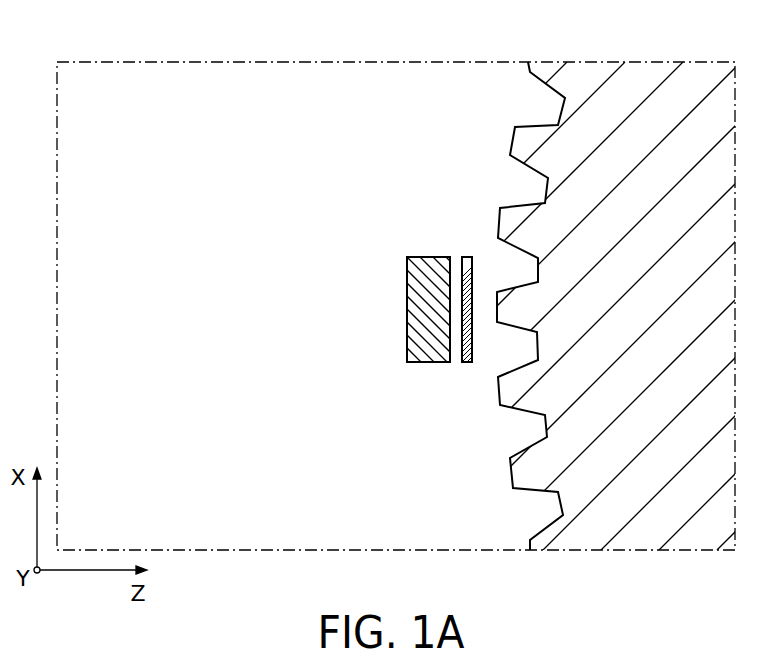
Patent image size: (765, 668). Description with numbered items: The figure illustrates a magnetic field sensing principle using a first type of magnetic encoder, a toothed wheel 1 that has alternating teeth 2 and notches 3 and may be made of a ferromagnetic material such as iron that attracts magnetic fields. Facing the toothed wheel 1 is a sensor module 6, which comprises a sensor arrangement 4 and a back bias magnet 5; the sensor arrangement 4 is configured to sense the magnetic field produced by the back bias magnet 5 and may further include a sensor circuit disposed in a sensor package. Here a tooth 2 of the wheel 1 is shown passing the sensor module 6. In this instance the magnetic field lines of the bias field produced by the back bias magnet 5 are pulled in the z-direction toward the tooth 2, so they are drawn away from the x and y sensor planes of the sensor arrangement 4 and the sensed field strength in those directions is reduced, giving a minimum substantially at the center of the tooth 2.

The toothed wheel 1 is at (583, 77).
The tooth 2 is at (512, 145).
The notch 3 is at (516, 98).
The sensor arrangement 4 is at (465, 362).
The back bias magnet 5 is at (427, 362).
The sensor module 6 is at (381, 359).